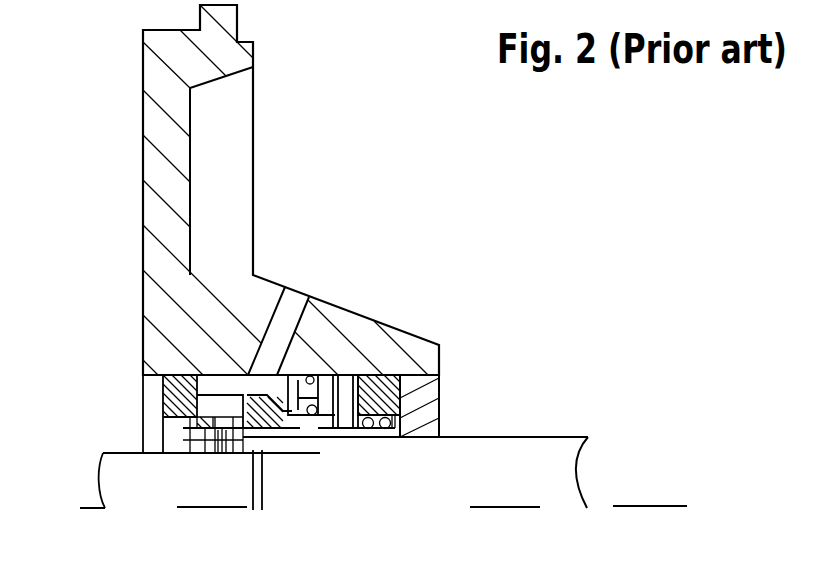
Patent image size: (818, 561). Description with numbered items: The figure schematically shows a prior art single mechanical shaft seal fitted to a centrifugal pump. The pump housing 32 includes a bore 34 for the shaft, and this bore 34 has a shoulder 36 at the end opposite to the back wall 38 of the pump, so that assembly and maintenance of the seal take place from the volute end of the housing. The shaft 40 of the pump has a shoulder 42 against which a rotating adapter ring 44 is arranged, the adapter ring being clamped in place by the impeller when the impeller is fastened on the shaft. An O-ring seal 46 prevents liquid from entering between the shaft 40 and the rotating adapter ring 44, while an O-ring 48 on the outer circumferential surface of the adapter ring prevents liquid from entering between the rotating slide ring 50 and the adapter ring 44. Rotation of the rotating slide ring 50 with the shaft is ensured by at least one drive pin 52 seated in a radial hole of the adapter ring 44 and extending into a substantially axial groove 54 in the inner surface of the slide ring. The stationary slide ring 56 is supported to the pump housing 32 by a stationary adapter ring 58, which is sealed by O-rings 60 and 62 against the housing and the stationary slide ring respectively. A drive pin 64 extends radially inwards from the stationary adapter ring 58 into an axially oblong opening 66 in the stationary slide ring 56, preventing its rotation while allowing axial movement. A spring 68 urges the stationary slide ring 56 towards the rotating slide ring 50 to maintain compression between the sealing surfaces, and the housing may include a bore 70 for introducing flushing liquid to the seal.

The back wall 38 is at (143, 140).
The bore 34 is at (145, 292).
The pump housing 32 is at (222, 313).
The bore 70 is at (288, 313).
The rotating slide ring 50 is at (167, 377).
The O-ring 48 is at (167, 430).
The O-ring seal 46 is at (107, 453).
The rotating adapter ring 44 is at (203, 450).
The drive pin 52 is at (218, 447).
The axial groove 54 is at (233, 453).
The shoulder 42 is at (372, 509).
The shaft 40 is at (483, 510).
The stationary slide ring 56 is at (315, 440).
The O-ring 60 is at (310, 378).
The O-ring 62 is at (340, 390).
The drive pin 64 is at (362, 380).
The shoulder 36 is at (383, 395).
The spring 68 is at (402, 420).
The stationary adapter ring 58 is at (418, 380).
The axially oblong opening 66 is at (413, 427).